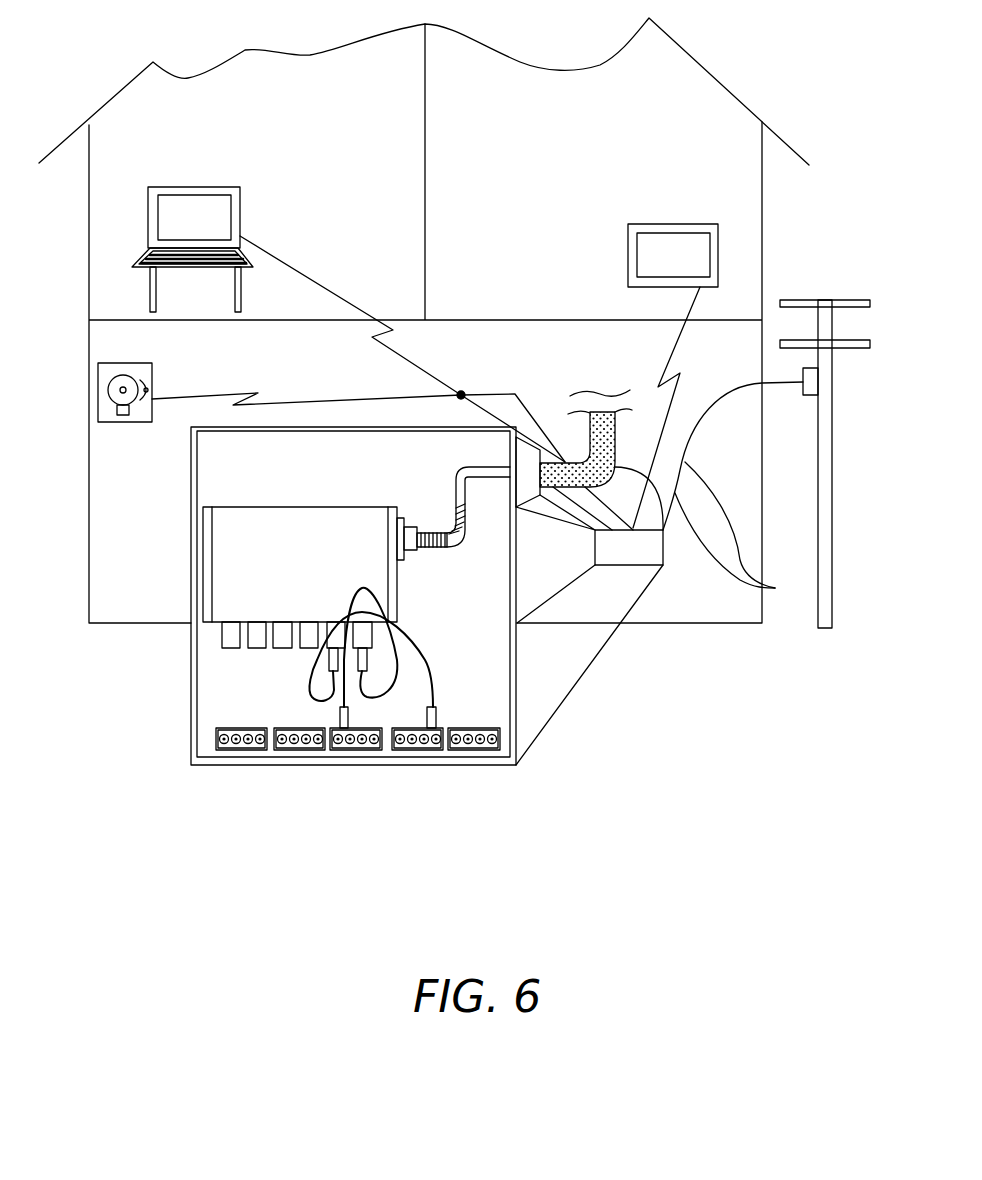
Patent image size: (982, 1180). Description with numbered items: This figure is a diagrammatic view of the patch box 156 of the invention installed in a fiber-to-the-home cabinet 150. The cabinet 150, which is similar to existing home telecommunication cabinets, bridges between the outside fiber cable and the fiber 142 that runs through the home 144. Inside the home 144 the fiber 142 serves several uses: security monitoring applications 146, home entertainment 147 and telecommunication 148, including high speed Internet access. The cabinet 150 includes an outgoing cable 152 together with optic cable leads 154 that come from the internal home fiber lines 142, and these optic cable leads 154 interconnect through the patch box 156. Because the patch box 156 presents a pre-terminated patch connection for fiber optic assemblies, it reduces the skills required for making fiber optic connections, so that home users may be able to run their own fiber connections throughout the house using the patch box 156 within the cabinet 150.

The fiber 142 is at (320, 283).
The home 144 is at (762, 237).
The security monitoring applications 146 is at (140, 363).
The home entertainment 147 is at (700, 222).
The telecommunication 148 is at (241, 217).
The cabinet 150 is at (193, 766).
The outgoing cable 152 is at (766, 464).
The optic cable leads 154 is at (310, 699).
The patch box 156 is at (327, 507).